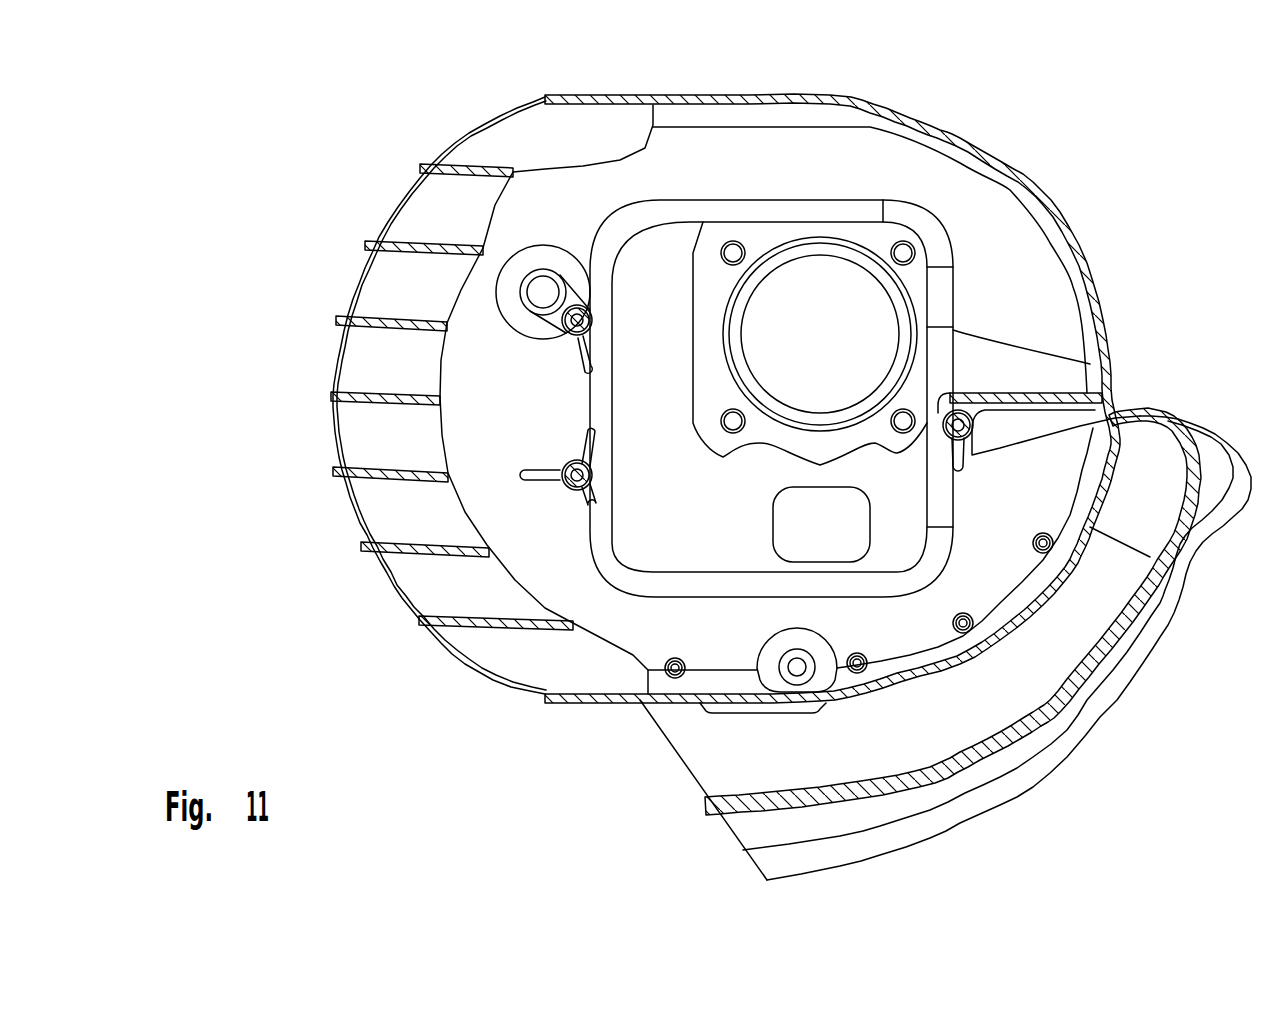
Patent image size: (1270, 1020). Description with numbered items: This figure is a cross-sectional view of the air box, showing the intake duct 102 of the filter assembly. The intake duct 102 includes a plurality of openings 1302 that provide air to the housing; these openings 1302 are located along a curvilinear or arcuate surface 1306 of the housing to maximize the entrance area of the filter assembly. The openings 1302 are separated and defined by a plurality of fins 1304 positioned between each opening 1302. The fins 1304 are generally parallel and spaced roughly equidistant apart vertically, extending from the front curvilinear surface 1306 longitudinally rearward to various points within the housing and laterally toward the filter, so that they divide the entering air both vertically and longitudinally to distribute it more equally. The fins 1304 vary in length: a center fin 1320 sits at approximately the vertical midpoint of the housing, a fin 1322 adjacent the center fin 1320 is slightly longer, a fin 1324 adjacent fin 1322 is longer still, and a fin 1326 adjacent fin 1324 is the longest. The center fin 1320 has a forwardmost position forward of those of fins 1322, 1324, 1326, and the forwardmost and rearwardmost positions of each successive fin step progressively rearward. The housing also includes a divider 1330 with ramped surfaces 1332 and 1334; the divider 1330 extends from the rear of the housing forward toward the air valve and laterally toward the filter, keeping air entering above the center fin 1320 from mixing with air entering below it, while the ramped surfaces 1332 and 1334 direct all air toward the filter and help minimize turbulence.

The intake duct 102 is at (700, 461).
The opening 1302 is at (300, 350).
The fin 1304 is at (513, 160).
The curvilinear surface 1306 is at (460, 140).
The center fin 1320 is at (330, 398).
The fin 1322 is at (345, 315).
The fin 1324 is at (405, 555).
The fin 1326 is at (480, 630).
The divider 1330 is at (1060, 397).
The ramped surface 1332 is at (1017, 370).
The ramped surface 1334 is at (1040, 427).